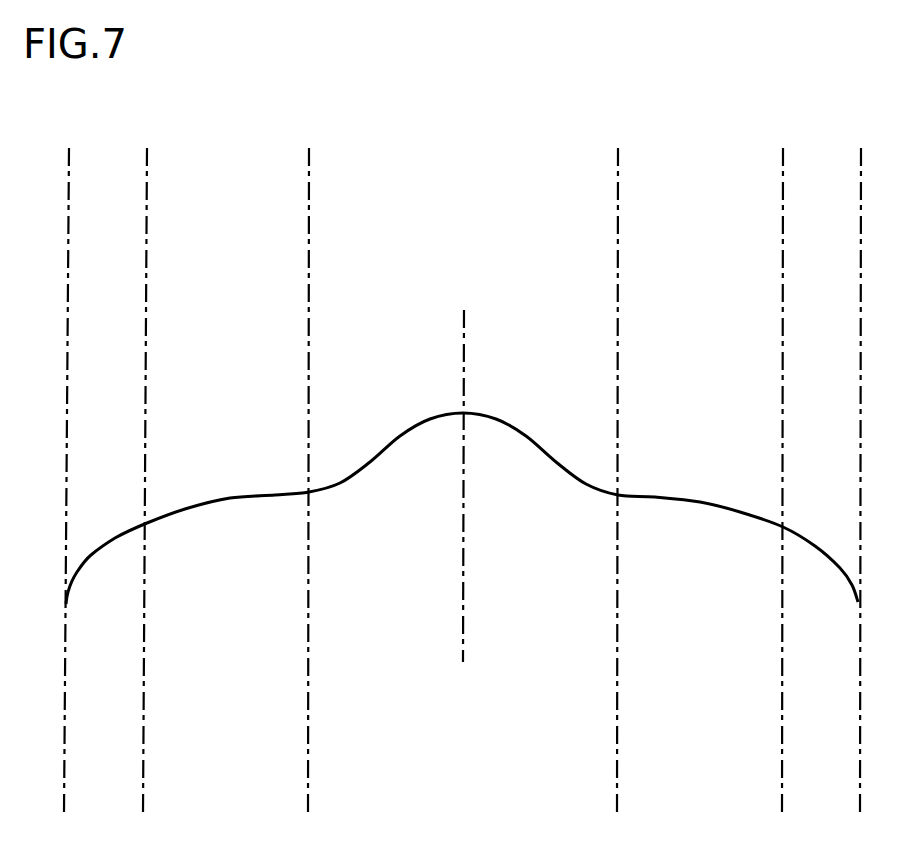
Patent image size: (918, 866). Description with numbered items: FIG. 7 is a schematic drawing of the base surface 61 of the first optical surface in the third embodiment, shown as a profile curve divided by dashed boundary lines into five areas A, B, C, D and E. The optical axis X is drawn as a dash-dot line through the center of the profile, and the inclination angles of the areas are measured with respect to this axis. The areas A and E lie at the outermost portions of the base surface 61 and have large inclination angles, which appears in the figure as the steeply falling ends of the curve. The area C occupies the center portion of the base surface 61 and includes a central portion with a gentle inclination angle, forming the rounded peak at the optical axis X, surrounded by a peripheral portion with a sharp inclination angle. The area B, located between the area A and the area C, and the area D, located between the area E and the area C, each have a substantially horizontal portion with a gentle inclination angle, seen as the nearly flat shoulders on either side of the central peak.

The base surface 61 is at (710, 503).
The optical axis X is at (466, 330).
The area A is at (108, 463).
The area B is at (226, 463).
The area C is at (463, 137).
The area D is at (700, 463).
The area E is at (822, 463).